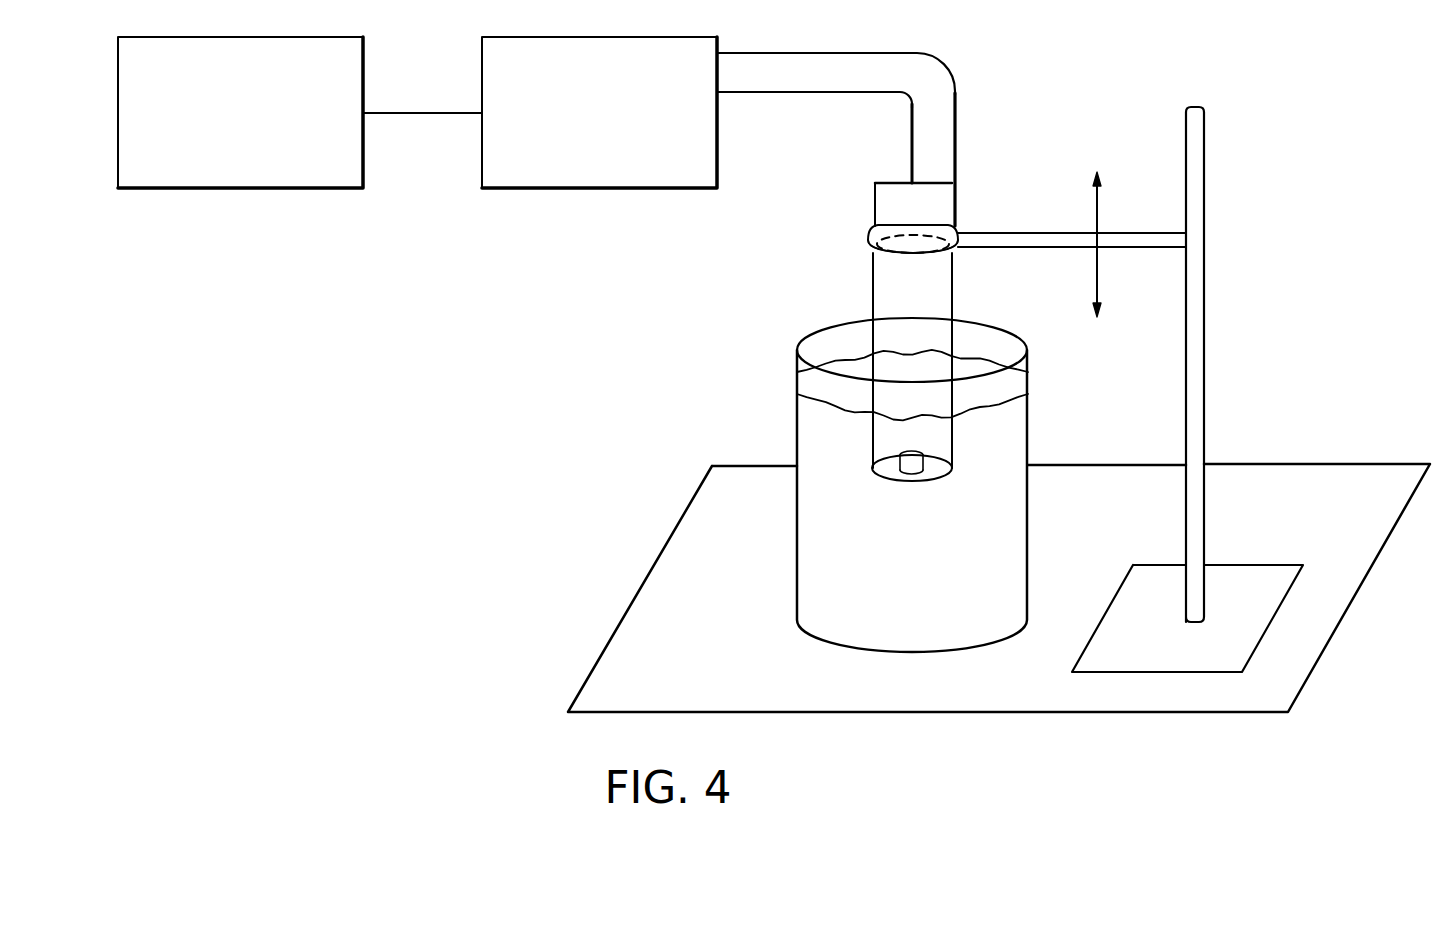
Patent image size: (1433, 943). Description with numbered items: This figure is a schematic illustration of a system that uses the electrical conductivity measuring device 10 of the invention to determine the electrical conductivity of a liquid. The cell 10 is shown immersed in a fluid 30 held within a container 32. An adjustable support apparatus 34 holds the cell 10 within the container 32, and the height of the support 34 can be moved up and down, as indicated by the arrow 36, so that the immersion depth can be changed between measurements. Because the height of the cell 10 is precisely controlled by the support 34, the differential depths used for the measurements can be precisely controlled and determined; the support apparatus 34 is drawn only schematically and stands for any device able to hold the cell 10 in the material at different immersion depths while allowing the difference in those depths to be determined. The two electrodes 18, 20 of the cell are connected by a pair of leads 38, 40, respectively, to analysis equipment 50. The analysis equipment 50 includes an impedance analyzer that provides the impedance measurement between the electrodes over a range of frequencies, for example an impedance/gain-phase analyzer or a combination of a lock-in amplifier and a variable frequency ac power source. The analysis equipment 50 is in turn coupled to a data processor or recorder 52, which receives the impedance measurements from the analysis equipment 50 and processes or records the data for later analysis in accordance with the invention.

The electrical conductivity measuring device 10 is at (1014, 171).
The electrode 18 is at (958, 147).
The electrode 20 is at (908, 150).
The fluid 30 is at (827, 562).
The container 32 is at (793, 517).
The adjustable support apparatus 34 is at (1206, 180).
The arrow 36 is at (1098, 208).
The lead 38 is at (833, 52).
The lead 40 is at (810, 93).
The analysis equipment 50 is at (618, 129).
The data processor or recorder 52 is at (258, 129).